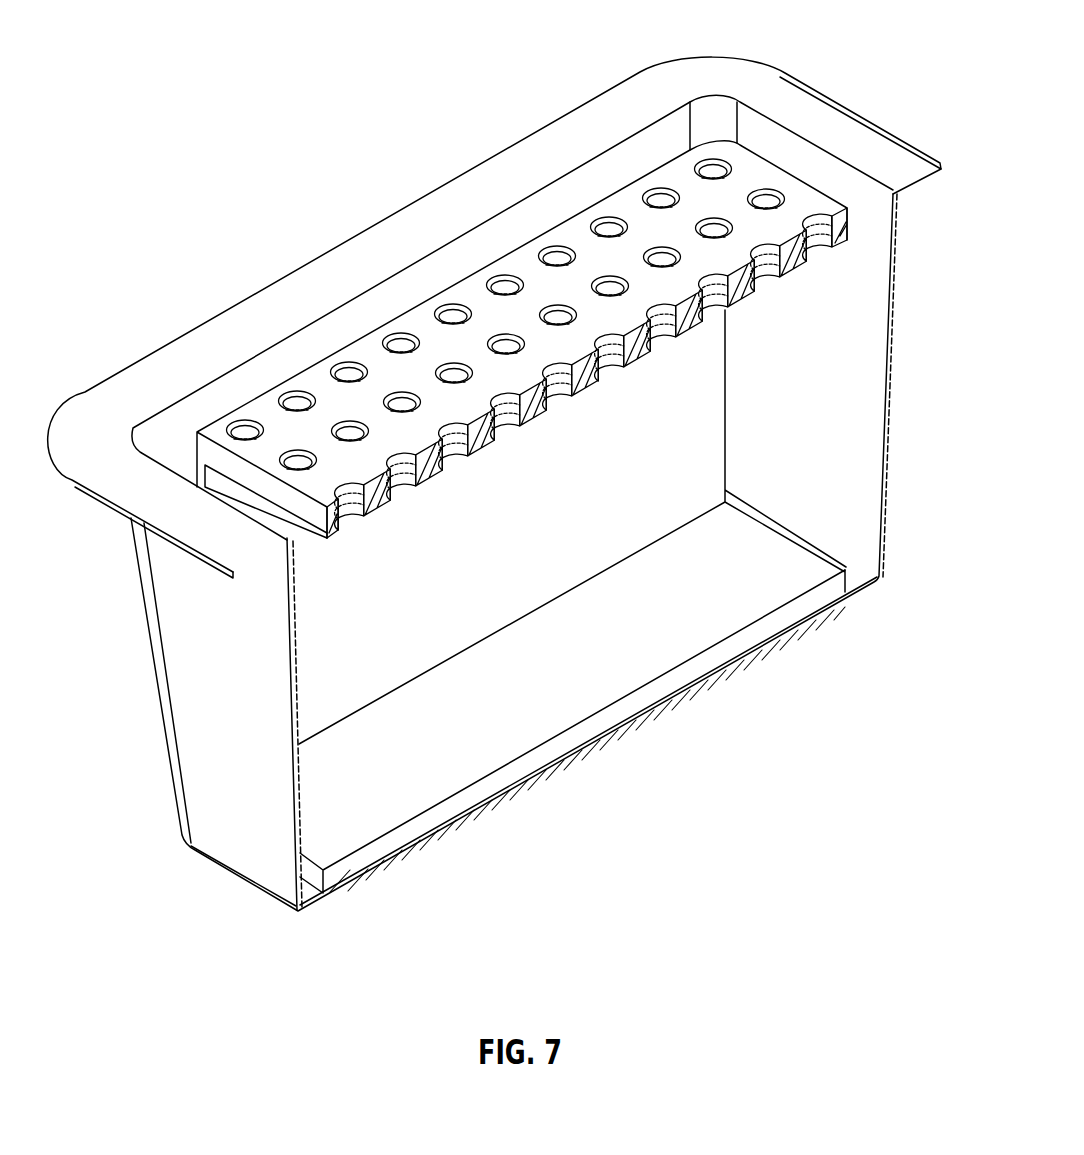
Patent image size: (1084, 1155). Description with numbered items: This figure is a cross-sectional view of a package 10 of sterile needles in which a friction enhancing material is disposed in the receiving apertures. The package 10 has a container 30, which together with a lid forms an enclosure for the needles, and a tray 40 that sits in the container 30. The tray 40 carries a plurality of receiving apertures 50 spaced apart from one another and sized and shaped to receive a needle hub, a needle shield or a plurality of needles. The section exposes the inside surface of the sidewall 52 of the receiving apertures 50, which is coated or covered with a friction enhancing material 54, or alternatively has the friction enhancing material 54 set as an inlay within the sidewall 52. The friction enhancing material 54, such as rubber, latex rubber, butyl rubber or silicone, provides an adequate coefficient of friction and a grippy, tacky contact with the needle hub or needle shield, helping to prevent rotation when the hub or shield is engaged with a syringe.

The package 10 is at (229, 170).
The container 30 is at (166, 730).
The tray 40 is at (370, 348).
The receiving apertures 50 is at (603, 214).
The sidewall 52 is at (806, 215).
The friction enhancing material 54 is at (838, 243).